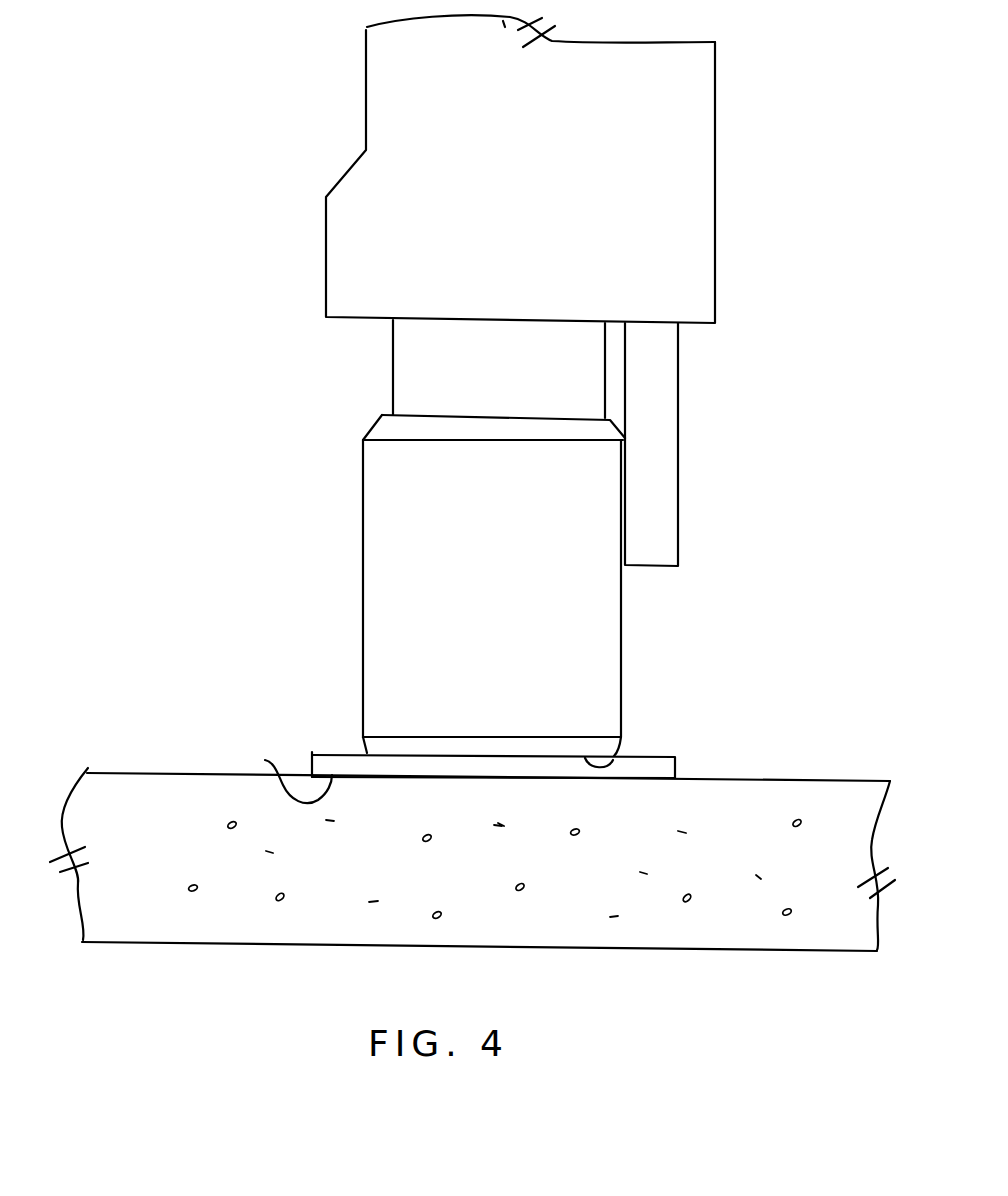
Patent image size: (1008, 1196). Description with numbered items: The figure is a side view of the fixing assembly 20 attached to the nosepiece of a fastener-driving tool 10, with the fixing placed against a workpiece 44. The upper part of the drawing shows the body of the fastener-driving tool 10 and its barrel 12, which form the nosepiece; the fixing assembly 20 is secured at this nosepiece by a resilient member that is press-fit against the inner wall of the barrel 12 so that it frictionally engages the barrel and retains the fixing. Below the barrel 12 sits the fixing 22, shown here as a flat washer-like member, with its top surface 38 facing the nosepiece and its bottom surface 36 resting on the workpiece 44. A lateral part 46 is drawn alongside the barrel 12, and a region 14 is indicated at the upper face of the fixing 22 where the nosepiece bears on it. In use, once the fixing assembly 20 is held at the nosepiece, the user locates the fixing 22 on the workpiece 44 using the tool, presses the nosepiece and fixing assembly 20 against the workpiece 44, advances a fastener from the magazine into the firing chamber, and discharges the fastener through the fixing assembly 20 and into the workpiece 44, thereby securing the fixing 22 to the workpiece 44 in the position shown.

The fastener-driving tool 10 is at (210, 305).
The barrel 12 is at (377, 610).
The upper surface of plate 14 is at (613, 758).
The fixing assembly 20 is at (275, 728).
The fixing 22 is at (647, 767).
The bottom surface 36 is at (280, 767).
The top surface 38 is at (328, 748).
The workpiece 44 is at (752, 807).
The side bracket 46 is at (662, 410).